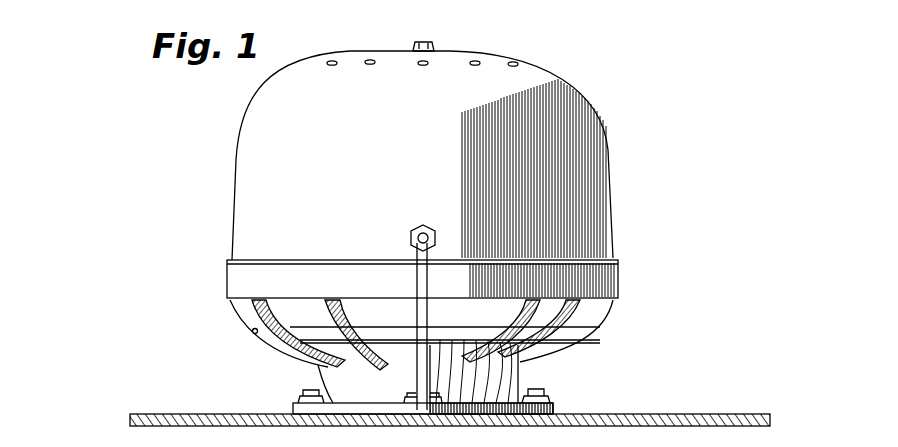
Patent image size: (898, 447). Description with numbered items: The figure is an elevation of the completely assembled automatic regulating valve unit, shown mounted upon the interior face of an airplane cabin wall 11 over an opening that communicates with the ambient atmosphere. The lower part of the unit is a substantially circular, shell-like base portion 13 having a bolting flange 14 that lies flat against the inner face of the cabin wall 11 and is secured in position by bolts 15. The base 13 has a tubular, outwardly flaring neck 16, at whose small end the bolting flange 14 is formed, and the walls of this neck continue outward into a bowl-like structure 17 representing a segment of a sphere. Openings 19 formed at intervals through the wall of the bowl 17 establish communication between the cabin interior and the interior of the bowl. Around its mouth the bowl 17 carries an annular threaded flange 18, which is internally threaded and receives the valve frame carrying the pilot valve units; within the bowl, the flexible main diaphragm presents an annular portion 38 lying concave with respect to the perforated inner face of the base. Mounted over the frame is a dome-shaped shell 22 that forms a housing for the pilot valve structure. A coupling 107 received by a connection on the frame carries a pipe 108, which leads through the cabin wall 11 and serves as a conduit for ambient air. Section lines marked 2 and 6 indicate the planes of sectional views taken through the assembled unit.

The section line 2- 2 is at (225, 259).
The section line 6-6 / top nut 6 is at (470, 25).
The airplane cabin wall 11 is at (224, 418).
The base portion 13 is at (316, 376).
The bolting flange 14 is at (297, 409).
The bolts 15 is at (540, 392).
The tubular outwardly flaring neck 16 is at (518, 378).
The bowl-like structure 17 is at (600, 336).
The annular threaded flange 18 is at (228, 298).
The openings 19 is at (253, 333).
The dome-shaped shell 22 is at (552, 67).
The annular portion of diaphragm 38 is at (328, 316).
The coupling 107 is at (409, 238).
The pipe 108 is at (418, 375).